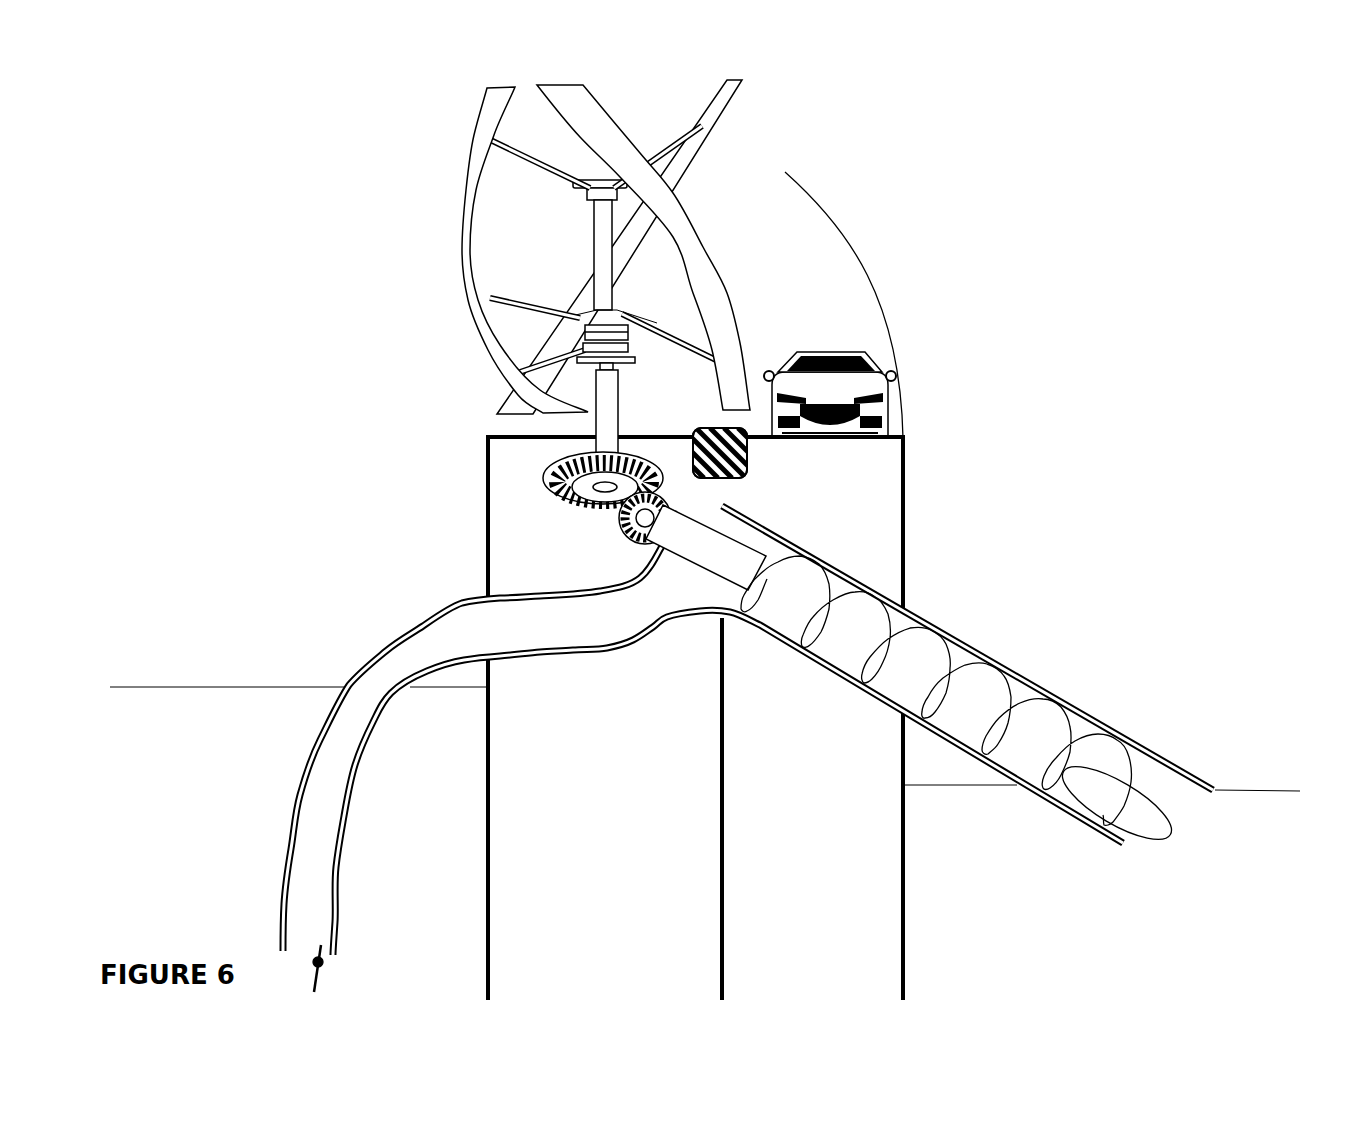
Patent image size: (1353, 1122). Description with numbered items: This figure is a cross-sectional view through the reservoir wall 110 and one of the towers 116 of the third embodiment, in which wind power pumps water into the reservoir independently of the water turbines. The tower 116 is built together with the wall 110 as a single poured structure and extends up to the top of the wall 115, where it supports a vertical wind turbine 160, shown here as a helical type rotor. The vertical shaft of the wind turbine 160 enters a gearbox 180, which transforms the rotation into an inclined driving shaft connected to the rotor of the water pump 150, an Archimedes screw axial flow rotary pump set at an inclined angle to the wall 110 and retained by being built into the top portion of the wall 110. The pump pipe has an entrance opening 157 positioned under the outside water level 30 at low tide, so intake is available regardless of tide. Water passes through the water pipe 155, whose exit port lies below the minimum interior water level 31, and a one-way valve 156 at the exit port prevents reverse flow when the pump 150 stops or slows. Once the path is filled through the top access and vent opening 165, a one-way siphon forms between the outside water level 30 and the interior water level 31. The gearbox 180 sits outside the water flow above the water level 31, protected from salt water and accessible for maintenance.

The wind turbine 160 is at (428, 170).
The top of the wall 115 is at (827, 294).
The top access and vent opening 165 is at (752, 462).
The gearbox 180 is at (573, 536).
The water pump 150 is at (952, 632).
The entrance opening 157 is at (1188, 804).
The water pipe 155 is at (392, 628).
The one-way valve 156 is at (305, 977).
The interior water level 31 is at (156, 740).
The tower 116 is at (663, 726).
The wall 110 is at (761, 726).
The water level 30 is at (996, 859).